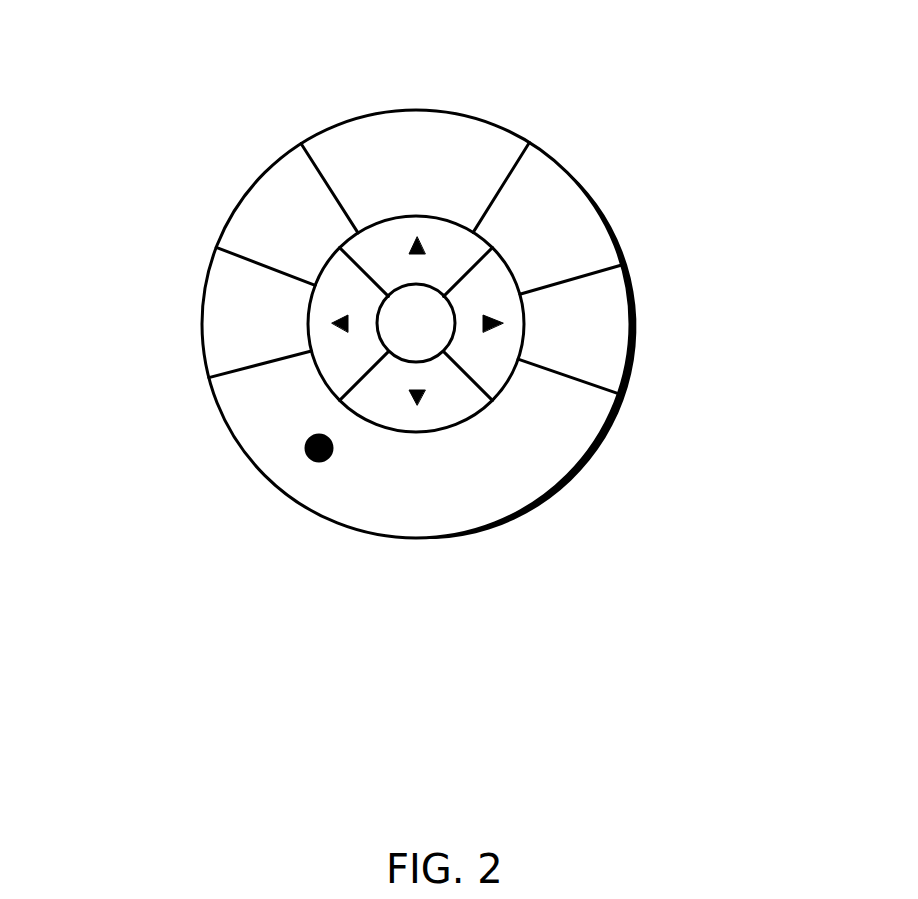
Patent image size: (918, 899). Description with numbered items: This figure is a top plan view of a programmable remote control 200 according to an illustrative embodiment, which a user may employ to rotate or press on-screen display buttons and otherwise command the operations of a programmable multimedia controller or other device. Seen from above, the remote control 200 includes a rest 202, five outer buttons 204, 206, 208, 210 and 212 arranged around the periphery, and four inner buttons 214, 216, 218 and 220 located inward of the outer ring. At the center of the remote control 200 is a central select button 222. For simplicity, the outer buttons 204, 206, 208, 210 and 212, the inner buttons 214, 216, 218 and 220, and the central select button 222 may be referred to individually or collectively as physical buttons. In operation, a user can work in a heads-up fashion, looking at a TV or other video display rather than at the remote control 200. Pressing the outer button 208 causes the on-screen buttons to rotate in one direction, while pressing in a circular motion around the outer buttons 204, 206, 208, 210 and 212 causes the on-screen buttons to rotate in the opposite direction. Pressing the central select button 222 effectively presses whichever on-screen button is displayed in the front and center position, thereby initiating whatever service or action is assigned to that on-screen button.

The programmable remote control 200 is at (568, 563).
The rest 202 is at (570, 445).
The outer button 204 is at (605, 330).
The outer button 206 is at (590, 243).
The outer button 208 is at (447, 128).
The outer button 210 is at (245, 236).
The outer button 212 is at (212, 318).
The inner button 214 is at (330, 367).
The inner button 216 is at (383, 250).
The inner button 218 is at (497, 278).
The inner button 220 is at (390, 413).
The central select button 222 is at (398, 310).